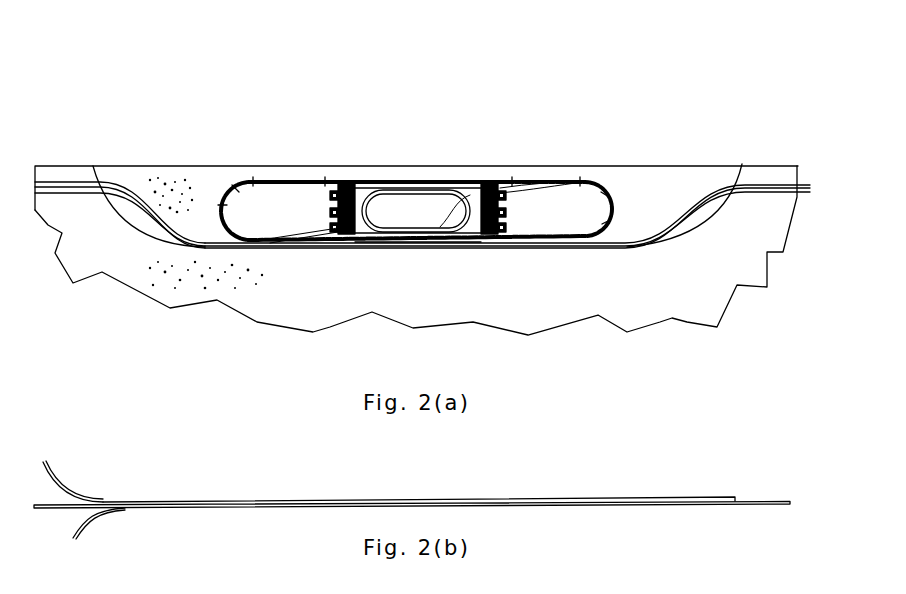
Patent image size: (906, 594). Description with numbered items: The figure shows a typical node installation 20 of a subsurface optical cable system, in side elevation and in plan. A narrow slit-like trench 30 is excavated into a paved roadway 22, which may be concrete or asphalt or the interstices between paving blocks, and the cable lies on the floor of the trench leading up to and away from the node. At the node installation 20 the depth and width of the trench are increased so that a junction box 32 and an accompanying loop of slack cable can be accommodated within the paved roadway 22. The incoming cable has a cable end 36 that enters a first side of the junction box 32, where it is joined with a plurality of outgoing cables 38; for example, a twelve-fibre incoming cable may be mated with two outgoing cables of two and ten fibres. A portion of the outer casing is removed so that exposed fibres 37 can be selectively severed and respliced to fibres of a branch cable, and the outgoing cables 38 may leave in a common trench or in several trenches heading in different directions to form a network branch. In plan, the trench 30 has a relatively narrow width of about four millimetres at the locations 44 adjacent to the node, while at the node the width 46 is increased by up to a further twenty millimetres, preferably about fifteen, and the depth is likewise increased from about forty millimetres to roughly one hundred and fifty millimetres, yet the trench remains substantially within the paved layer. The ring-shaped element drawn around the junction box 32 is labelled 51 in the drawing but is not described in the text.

In FIG. 2A, the node installation 20 is at (250, 158).
In FIG. 2A, the paved roadway 22 is at (710, 280).
In FIG. 2A, the trench 30 is at (57, 168).
In FIG. 2B, the trench 30 is at (187, 500).
In FIG. 2A, the junction box 32 is at (480, 180).
In FIG. 2A, the cable end 36 is at (505, 185).
In FIG. 2A, the exposed fibres 37 is at (408, 248).
In FIG. 2A, the outgoing cables 38 is at (335, 234).
In FIG. 2B, the locations adjacent to the node 44 is at (42, 507).
In FIG. 2A, the width 46 is at (675, 175).
In FIG. 2B, the width 46 is at (313, 502).
In FIG. 2A, the ring seal 51 is at (577, 178).